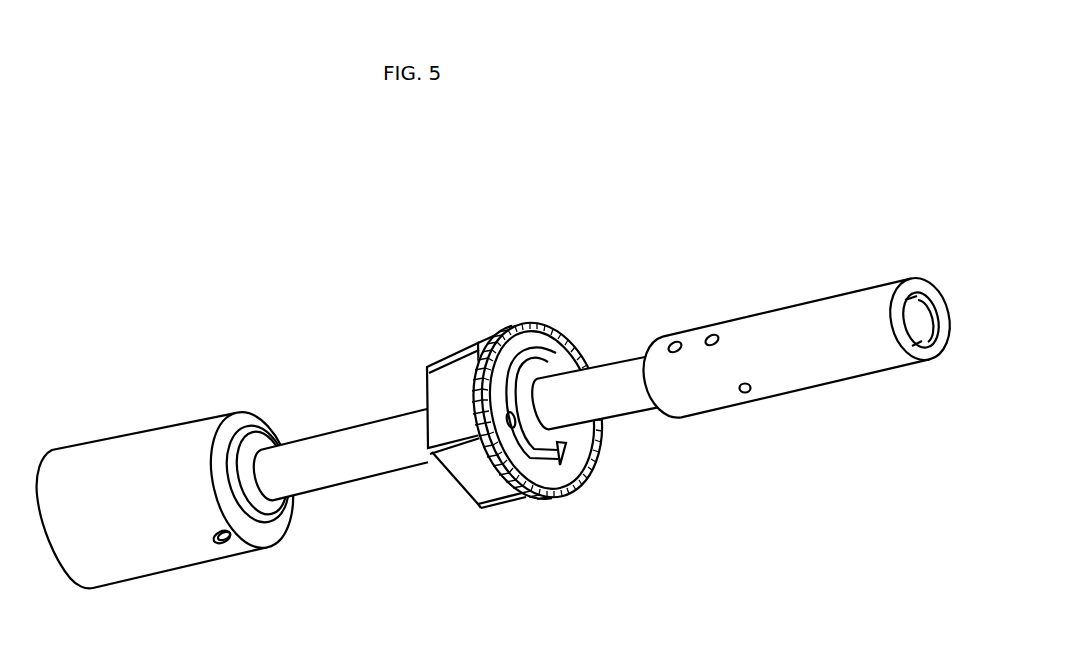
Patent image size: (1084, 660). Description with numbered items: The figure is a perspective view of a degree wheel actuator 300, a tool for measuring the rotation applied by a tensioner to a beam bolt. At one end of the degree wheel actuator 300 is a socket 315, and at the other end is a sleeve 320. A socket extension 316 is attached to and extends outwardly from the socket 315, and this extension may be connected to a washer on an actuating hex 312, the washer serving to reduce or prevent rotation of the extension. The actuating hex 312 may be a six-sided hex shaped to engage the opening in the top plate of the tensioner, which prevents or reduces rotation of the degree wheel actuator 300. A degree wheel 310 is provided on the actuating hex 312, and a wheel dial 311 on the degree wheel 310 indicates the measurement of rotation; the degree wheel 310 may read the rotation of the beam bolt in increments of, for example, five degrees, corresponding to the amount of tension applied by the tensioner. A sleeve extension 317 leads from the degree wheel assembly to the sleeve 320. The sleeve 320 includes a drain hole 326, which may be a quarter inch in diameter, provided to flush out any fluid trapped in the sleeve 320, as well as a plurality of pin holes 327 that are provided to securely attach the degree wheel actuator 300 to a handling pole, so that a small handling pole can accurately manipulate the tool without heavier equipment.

The degree wheel actuator 300 is at (497, 436).
The degree wheel 310 is at (537, 322).
The wheel dial 311 is at (590, 476).
The actuating hex 312 is at (453, 354).
The socket 315 is at (157, 572).
The socket extension 316 is at (325, 430).
The sleeve extension 317 is at (623, 360).
The sleeve 320 is at (801, 369).
The drain hole 326 is at (745, 393).
The pin holes 327 is at (715, 338).